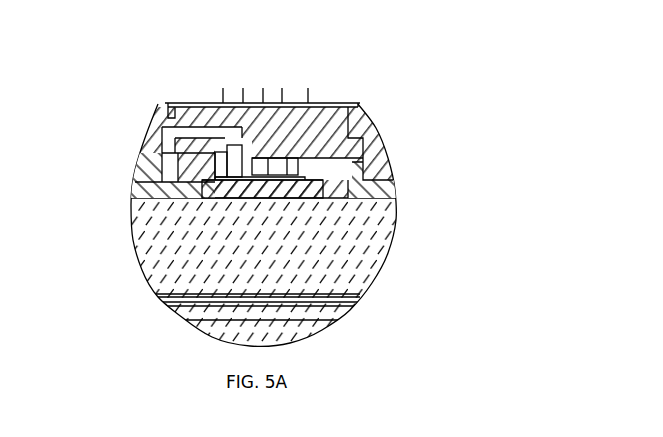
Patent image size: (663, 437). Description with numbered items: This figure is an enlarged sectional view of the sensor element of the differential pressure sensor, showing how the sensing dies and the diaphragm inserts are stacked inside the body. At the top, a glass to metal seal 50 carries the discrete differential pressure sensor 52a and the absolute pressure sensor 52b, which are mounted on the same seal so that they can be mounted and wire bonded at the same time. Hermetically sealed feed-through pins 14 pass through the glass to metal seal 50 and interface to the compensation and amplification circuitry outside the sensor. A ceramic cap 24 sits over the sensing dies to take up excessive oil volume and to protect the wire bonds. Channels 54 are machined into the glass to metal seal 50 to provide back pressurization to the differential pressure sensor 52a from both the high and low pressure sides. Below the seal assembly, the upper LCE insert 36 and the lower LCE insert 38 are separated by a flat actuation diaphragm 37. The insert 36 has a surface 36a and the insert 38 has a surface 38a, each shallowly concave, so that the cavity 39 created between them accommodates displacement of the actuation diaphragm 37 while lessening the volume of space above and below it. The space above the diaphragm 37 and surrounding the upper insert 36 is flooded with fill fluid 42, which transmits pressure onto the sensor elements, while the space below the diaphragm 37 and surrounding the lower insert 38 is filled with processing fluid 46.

The feed-through pins 14 is at (224, 90).
The ceramic cap 24 is at (303, 200).
The upper LCE insert 36 is at (243, 250).
The surface 36a is at (232, 294).
The flat actuation diaphragm 37 is at (168, 298).
The lower LCE insert 38 is at (260, 302).
The surface 38a is at (263, 339).
The cavity 39 is at (262, 282).
The fill fluid 42 is at (363, 270).
The processing fluid 46 is at (230, 322).
The glass to metal seal 50 is at (349, 103).
The differential pressure sensor 52a is at (228, 170).
The absolute pressure sensor 52b is at (320, 137).
The channels 54 is at (233, 132).